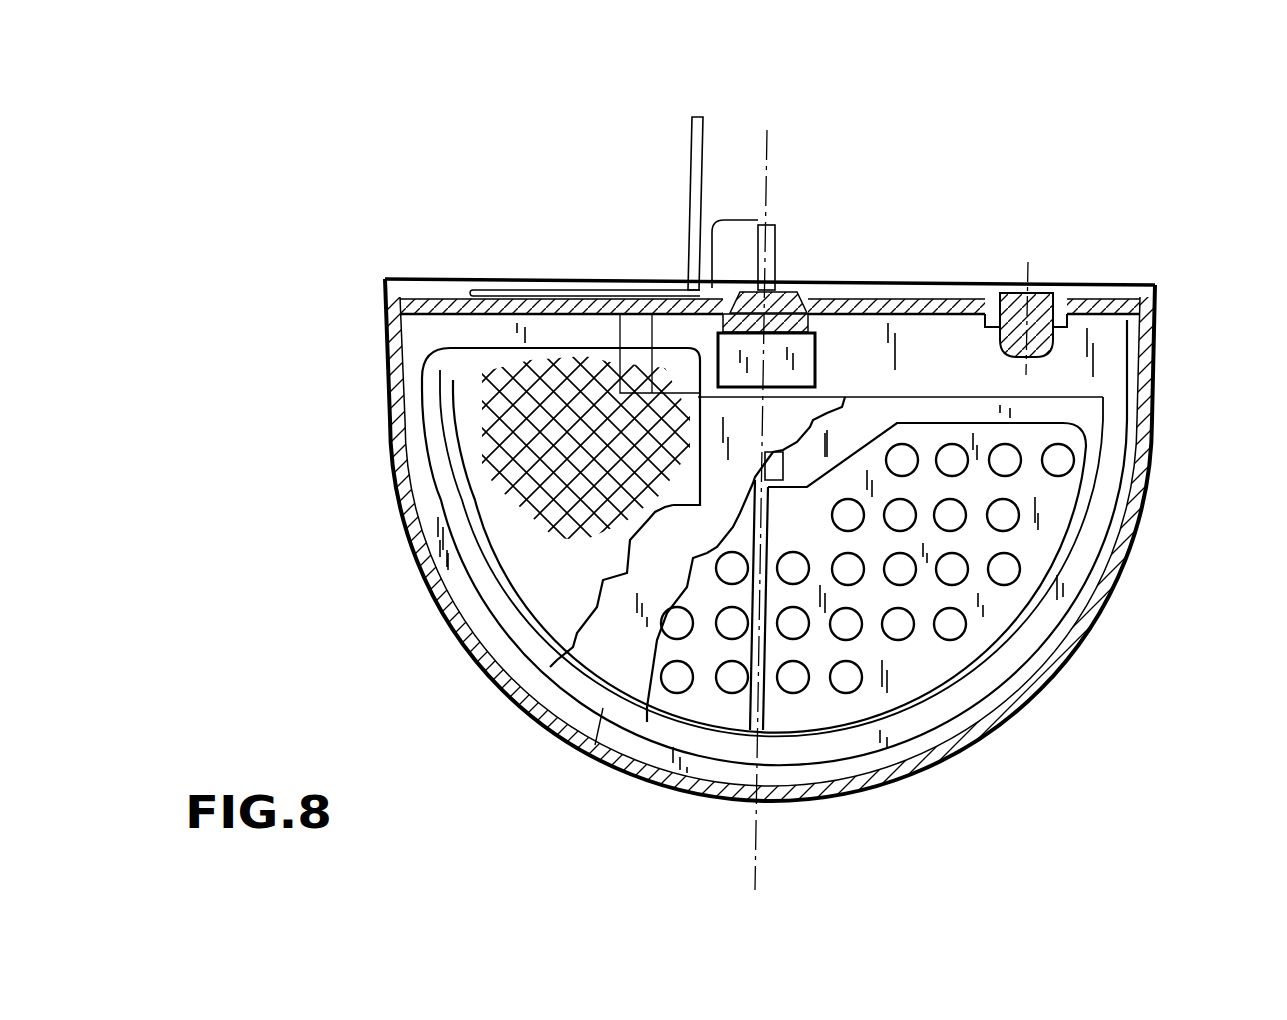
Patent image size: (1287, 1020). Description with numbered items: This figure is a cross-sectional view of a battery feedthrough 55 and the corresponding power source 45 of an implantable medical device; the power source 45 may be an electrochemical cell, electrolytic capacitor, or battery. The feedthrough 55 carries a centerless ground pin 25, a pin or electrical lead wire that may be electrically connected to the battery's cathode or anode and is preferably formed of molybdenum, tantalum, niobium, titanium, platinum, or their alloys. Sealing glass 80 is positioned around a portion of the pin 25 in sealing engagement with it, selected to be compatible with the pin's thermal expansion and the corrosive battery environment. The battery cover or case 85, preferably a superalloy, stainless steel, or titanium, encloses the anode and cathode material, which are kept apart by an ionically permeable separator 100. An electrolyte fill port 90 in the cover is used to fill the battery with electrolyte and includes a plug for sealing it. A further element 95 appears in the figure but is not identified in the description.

The power source 45 is at (506, 160).
The battery feedthrough 55 is at (697, 290).
The sealing glass 80 is at (752, 292).
The centerless ground pin 25 is at (777, 232).
The battery cover 85 is at (945, 300).
The electrolyte fill port 90 is at (1055, 295).
The perforated plate 95 is at (1083, 525).
The ionically permeable separator 100 is at (595, 745).